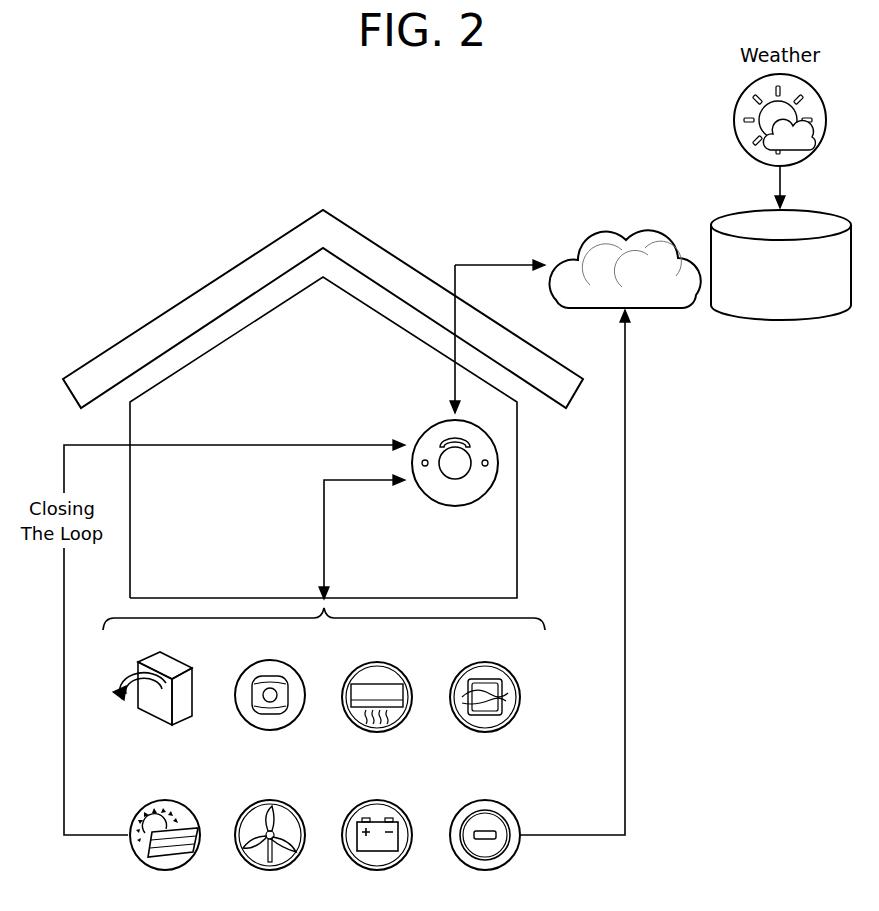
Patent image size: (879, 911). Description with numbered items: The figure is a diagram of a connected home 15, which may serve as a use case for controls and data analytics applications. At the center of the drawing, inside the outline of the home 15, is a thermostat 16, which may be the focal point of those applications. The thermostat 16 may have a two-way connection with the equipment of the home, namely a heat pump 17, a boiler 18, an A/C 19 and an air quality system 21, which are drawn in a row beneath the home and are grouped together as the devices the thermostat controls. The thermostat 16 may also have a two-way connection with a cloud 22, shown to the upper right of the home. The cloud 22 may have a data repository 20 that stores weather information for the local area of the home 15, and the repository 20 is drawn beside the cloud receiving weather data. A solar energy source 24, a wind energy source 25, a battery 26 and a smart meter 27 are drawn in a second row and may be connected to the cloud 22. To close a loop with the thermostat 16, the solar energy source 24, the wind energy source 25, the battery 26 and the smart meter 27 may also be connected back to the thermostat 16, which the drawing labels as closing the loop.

The connected home 15 is at (430, 222).
The thermostat 16 is at (487, 451).
The heat pump 17 is at (193, 669).
The boiler 18 is at (295, 669).
The A/C 19 is at (403, 669).
The data repository 20 is at (779, 322).
The air quality system 21 is at (508, 669).
The cloud 22 is at (623, 218).
The solar energy source 24 is at (187, 808).
The wind energy source 25 is at (294, 808).
The battery 26 is at (401, 808).
The smart meter 27 is at (510, 808).